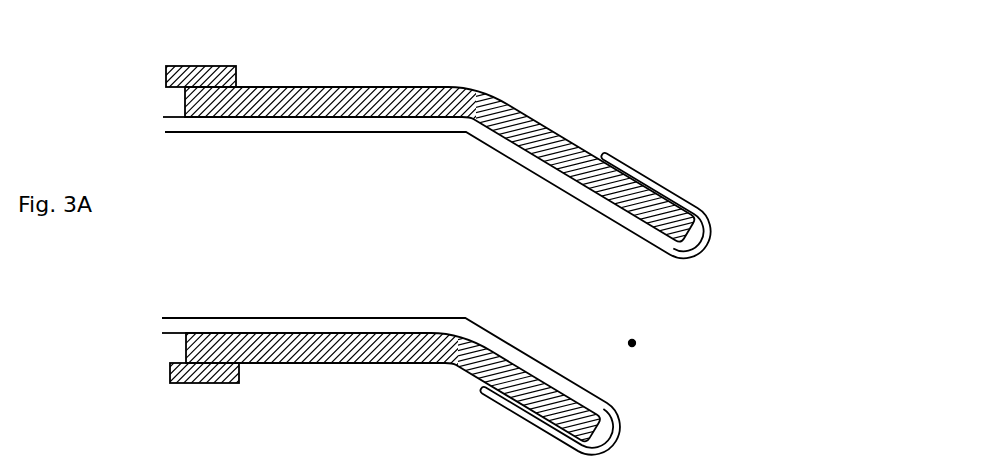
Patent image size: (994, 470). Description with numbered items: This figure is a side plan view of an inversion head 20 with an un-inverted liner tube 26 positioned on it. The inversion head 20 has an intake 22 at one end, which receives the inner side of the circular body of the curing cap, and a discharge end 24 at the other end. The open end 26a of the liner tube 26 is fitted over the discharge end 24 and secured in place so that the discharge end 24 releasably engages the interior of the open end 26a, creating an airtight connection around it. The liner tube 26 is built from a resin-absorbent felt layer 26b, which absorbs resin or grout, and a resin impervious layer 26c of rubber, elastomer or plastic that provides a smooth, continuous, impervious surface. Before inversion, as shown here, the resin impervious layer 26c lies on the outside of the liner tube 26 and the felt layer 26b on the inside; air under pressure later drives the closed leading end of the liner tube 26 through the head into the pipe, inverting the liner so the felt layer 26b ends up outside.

The inversion head 20 is at (303, 400).
The intake 22 is at (212, 66).
The discharge end 24 is at (662, 226).
The liner tube 26 is at (659, 181).
The open end 26a is at (637, 347).
The felt layer 26b is at (440, 316).
The resin impervious layer 26c is at (175, 332).